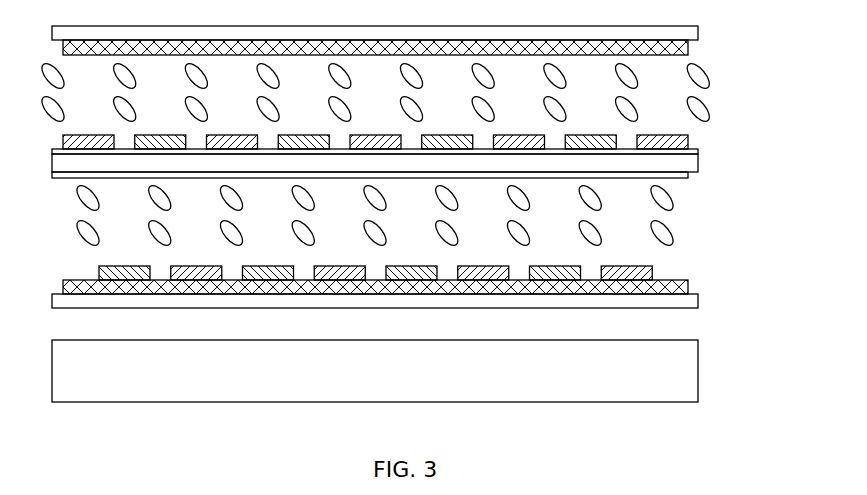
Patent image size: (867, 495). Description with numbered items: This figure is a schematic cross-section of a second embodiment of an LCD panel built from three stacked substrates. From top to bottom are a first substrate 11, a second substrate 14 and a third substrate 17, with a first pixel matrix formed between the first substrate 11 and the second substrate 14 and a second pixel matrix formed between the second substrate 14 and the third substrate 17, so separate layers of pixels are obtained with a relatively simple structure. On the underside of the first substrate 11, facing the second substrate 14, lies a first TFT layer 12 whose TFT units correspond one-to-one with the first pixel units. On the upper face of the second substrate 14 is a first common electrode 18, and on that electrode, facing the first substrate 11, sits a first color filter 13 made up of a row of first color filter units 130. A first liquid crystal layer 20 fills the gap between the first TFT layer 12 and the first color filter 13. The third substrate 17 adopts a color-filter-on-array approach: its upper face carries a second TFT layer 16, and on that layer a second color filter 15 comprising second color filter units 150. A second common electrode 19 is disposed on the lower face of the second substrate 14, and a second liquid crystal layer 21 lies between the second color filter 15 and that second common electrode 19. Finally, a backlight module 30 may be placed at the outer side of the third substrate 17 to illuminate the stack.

The first substrate 11 is at (699, 33).
The first TFT layer 12 is at (681, 46).
The first liquid crystal layer 20 is at (703, 73).
The first color filter units 130 is at (682, 142).
The first color filter 13 is at (713, 136).
The first common electrode 18 is at (698, 152).
The second substrate 14 is at (685, 166).
The second common electrode 19 is at (677, 178).
The second liquid crystal layer 21 is at (670, 231).
The second color filter units 150 is at (640, 266).
The second color filter 15 is at (676, 268).
The second TFT layer 16 is at (688, 286).
The third substrate 17 is at (679, 302).
The backlight module 30 is at (686, 368).